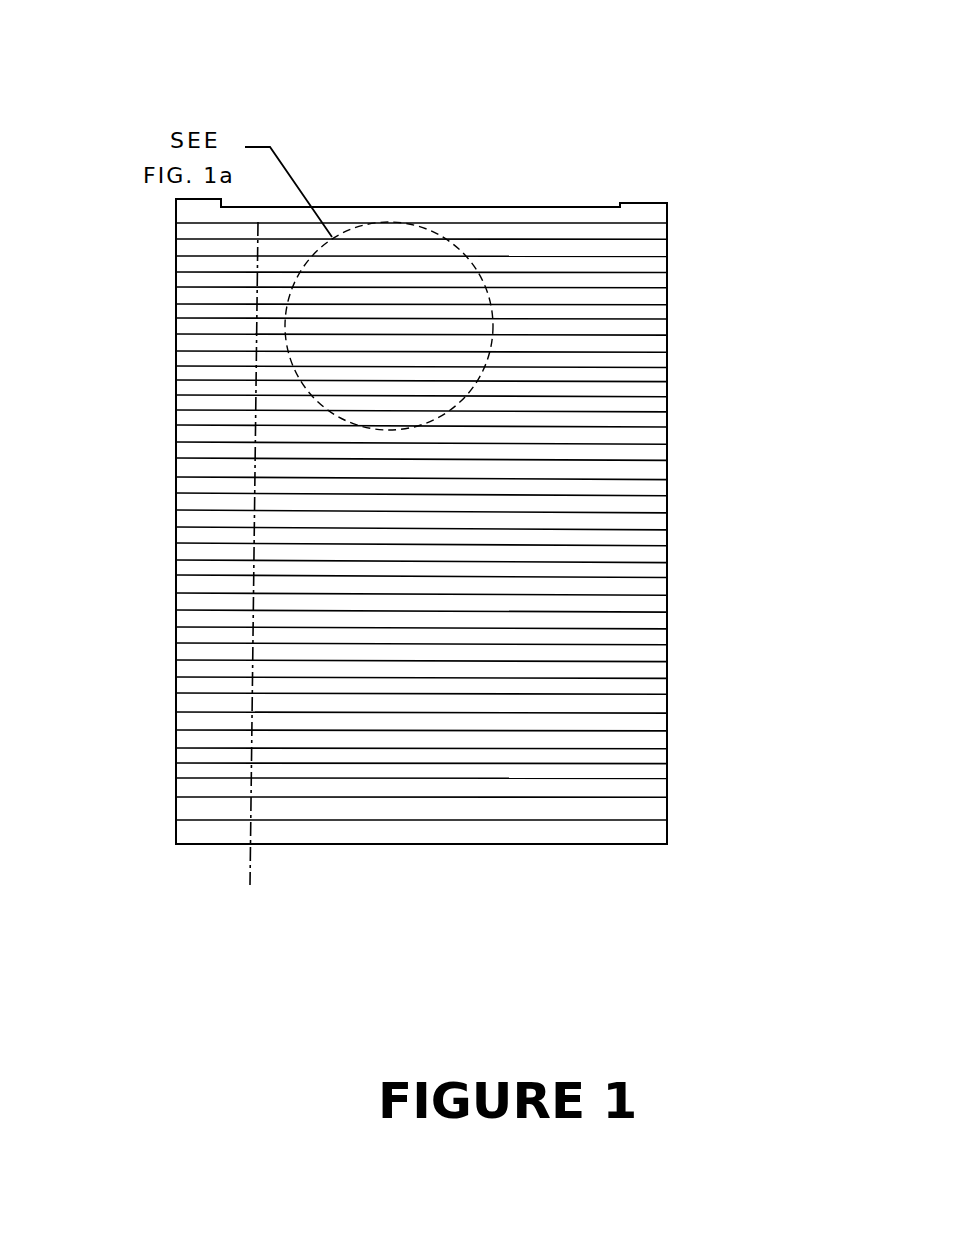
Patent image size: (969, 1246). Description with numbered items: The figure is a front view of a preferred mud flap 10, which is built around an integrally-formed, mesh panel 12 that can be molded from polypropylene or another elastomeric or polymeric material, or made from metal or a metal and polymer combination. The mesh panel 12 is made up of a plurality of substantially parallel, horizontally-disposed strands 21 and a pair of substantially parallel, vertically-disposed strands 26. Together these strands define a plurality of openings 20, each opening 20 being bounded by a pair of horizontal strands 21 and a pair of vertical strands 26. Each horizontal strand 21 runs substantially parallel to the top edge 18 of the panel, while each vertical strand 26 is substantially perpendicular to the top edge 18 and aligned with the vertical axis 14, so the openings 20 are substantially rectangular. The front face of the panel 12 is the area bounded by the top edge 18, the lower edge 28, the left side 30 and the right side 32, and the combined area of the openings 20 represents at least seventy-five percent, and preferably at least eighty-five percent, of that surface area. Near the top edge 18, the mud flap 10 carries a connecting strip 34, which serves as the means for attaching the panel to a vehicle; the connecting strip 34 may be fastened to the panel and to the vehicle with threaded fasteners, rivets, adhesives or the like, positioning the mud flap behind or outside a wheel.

The mud flap 10 is at (340, 148).
The integrally-formed mesh panel 12 is at (683, 778).
The vertical axis 14 is at (248, 863).
The top edge 18 is at (200, 223).
The opening 20 is at (648, 346).
The horizontal strand 21 is at (575, 235).
The vertical strand 26 is at (175, 362).
The lower edge 28 is at (481, 848).
The left side 30 is at (173, 614).
The right side 32 is at (670, 670).
The connecting strip 34 is at (652, 218).